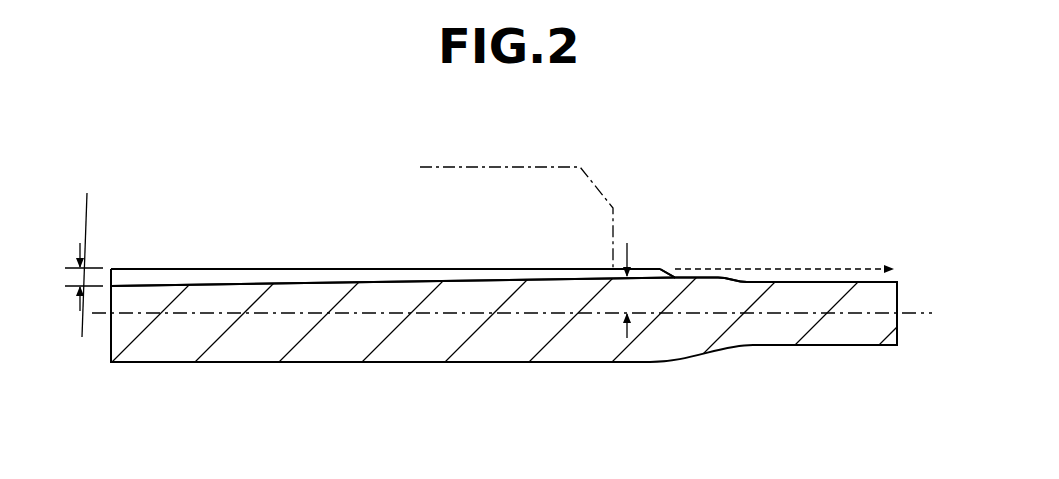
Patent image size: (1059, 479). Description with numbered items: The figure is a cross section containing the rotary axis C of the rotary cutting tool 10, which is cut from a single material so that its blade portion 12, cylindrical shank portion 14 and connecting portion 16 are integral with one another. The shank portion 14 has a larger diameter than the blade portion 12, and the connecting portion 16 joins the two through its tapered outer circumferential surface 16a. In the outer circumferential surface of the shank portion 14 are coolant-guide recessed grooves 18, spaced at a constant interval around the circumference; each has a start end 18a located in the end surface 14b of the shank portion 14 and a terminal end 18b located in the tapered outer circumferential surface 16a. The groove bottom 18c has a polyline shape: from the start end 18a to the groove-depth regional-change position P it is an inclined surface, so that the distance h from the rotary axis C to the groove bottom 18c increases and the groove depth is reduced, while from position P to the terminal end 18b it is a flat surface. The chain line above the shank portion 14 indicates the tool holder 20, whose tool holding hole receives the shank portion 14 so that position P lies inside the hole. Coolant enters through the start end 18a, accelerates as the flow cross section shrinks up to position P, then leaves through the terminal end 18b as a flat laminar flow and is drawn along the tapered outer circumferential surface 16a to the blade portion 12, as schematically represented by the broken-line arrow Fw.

The rotary cutting tool 10 is at (877, 106).
The blade portion 12 is at (897, 378).
The shank portion 14 is at (112, 378).
The end surface of the shank portion 14b is at (110, 348).
The connecting portion 16 is at (753, 378).
The tapered outer circumferential surface 16a is at (731, 262).
The coolant-guide recessed groove 18 is at (393, 260).
The start end 18a is at (117, 284).
The terminal end 18b is at (718, 276).
The groove bottom 18c is at (208, 282).
The tool holder 20 is at (512, 165).
The groove-depth regional-change position P is at (565, 276).
The distance from the rotary axis to the groove bottom h is at (638, 290).
The flow of the coolant Fw is at (833, 262).
The rotary axis C is at (919, 311).